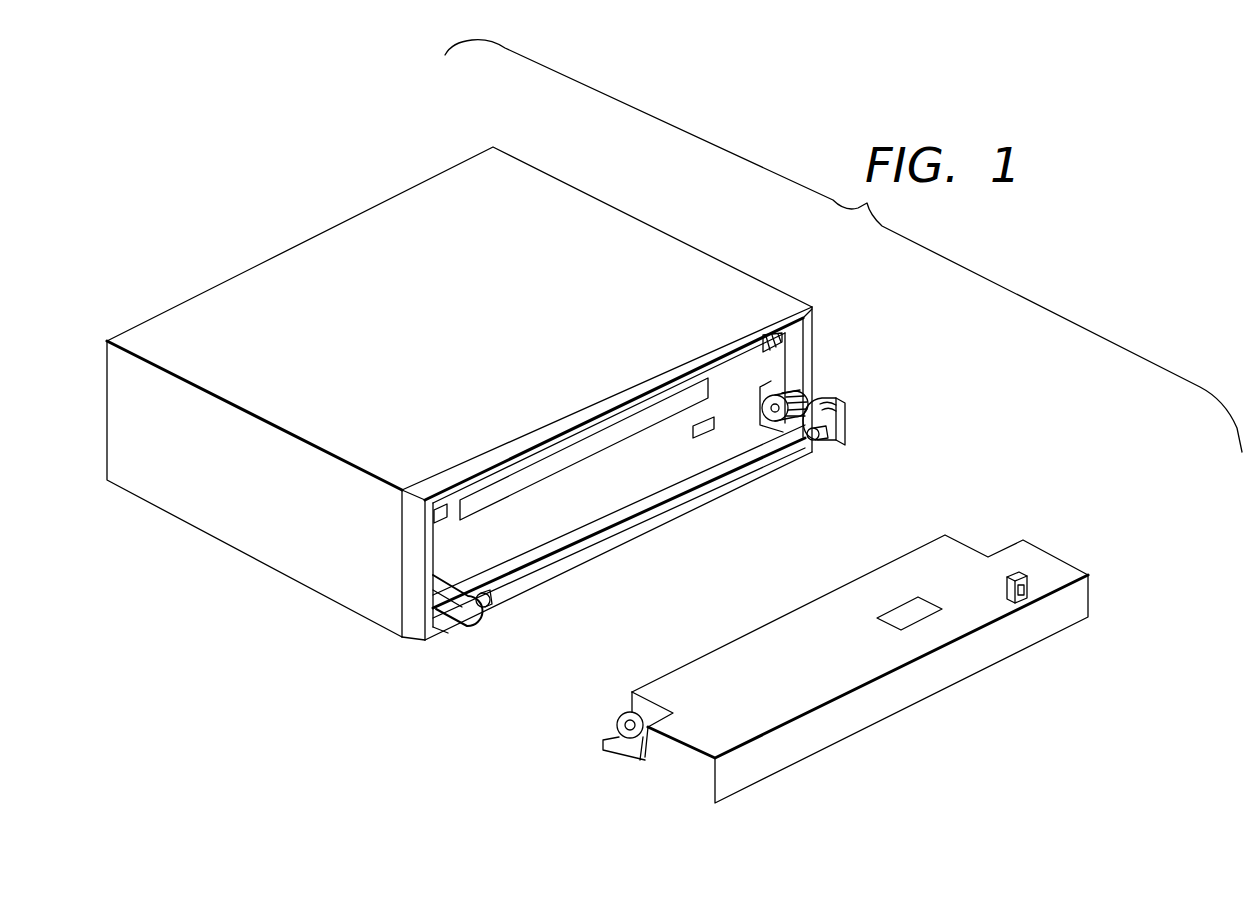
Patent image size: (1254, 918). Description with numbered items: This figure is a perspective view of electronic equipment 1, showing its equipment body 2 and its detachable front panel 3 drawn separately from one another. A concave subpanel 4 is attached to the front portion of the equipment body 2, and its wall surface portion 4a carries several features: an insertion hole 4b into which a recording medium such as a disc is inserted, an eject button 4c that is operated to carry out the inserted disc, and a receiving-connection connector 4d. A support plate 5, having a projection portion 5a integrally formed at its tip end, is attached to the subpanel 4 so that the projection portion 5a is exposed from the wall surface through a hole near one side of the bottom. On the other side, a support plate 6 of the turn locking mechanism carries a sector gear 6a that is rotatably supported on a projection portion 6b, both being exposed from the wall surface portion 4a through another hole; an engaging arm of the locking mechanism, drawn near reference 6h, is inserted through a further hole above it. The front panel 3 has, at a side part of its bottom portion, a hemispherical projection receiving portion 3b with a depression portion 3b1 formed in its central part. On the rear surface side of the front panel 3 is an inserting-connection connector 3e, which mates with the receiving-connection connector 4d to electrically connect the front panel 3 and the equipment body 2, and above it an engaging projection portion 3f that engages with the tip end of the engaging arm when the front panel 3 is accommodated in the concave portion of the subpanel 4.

The electronic equipment 1 is at (927, 366).
The equipment body 2 is at (700, 247).
The front panel 3 is at (902, 700).
The projection receiving portion 3b is at (615, 752).
The depression portion 3b1 is at (618, 722).
The inserting-connection connector 3e is at (878, 620).
The engaging projection portion 3f is at (1022, 600).
The subpanel 4 is at (550, 427).
The wall surface portion 4a is at (627, 485).
The insertion hole 4b is at (540, 487).
The eject button 4c is at (430, 522).
The receiving-connection connector 4d is at (703, 438).
The support plate 5 is at (462, 622).
The projection portion 5a is at (493, 603).
The support plate 6 is at (812, 398).
The sector gear 6a is at (846, 428).
The projection portion 6b is at (823, 447).
The holder 6h is at (786, 340).